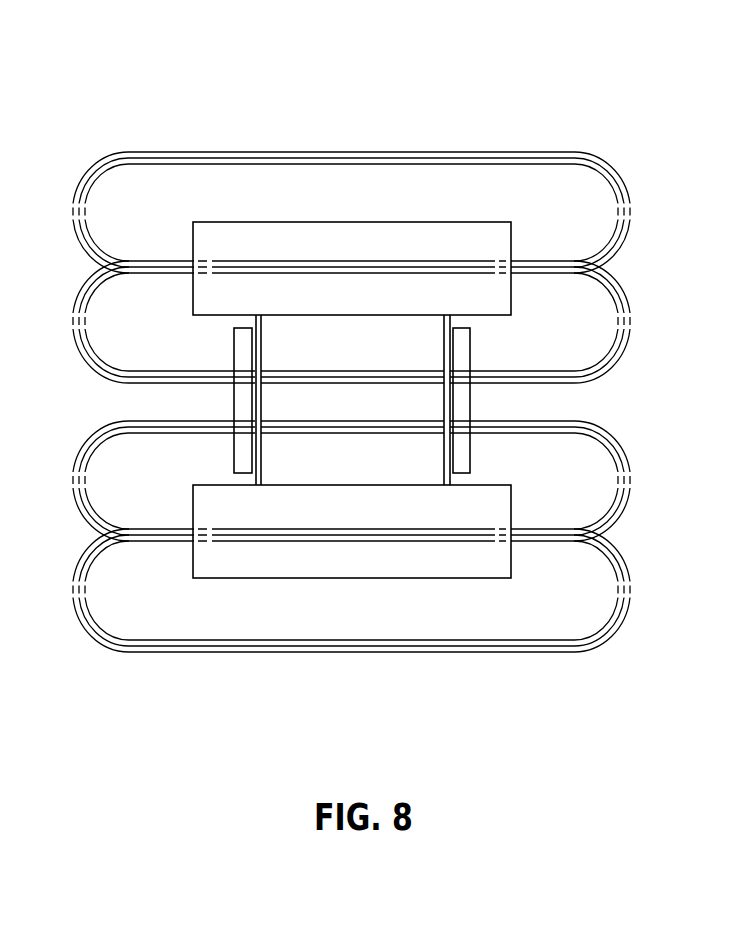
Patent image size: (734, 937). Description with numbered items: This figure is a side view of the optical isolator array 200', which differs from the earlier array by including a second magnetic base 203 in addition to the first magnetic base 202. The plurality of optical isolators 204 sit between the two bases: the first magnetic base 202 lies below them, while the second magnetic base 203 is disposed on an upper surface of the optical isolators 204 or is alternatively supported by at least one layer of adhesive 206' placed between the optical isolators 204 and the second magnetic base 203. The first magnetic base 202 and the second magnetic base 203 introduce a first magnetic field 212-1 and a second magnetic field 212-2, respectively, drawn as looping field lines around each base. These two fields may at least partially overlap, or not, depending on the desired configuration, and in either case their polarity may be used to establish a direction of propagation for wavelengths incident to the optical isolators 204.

The optical isolator array 200' is at (364, 338).
The second magnetic field 212-2 is at (625, 150).
The first magnetic field 212-1 is at (634, 435).
The second magnetic base 203 is at (509, 240).
The first magnetic base 202 is at (505, 500).
The layer of adhesive 206' is at (393, 400).
The optical isolators 204 is at (210, 347).